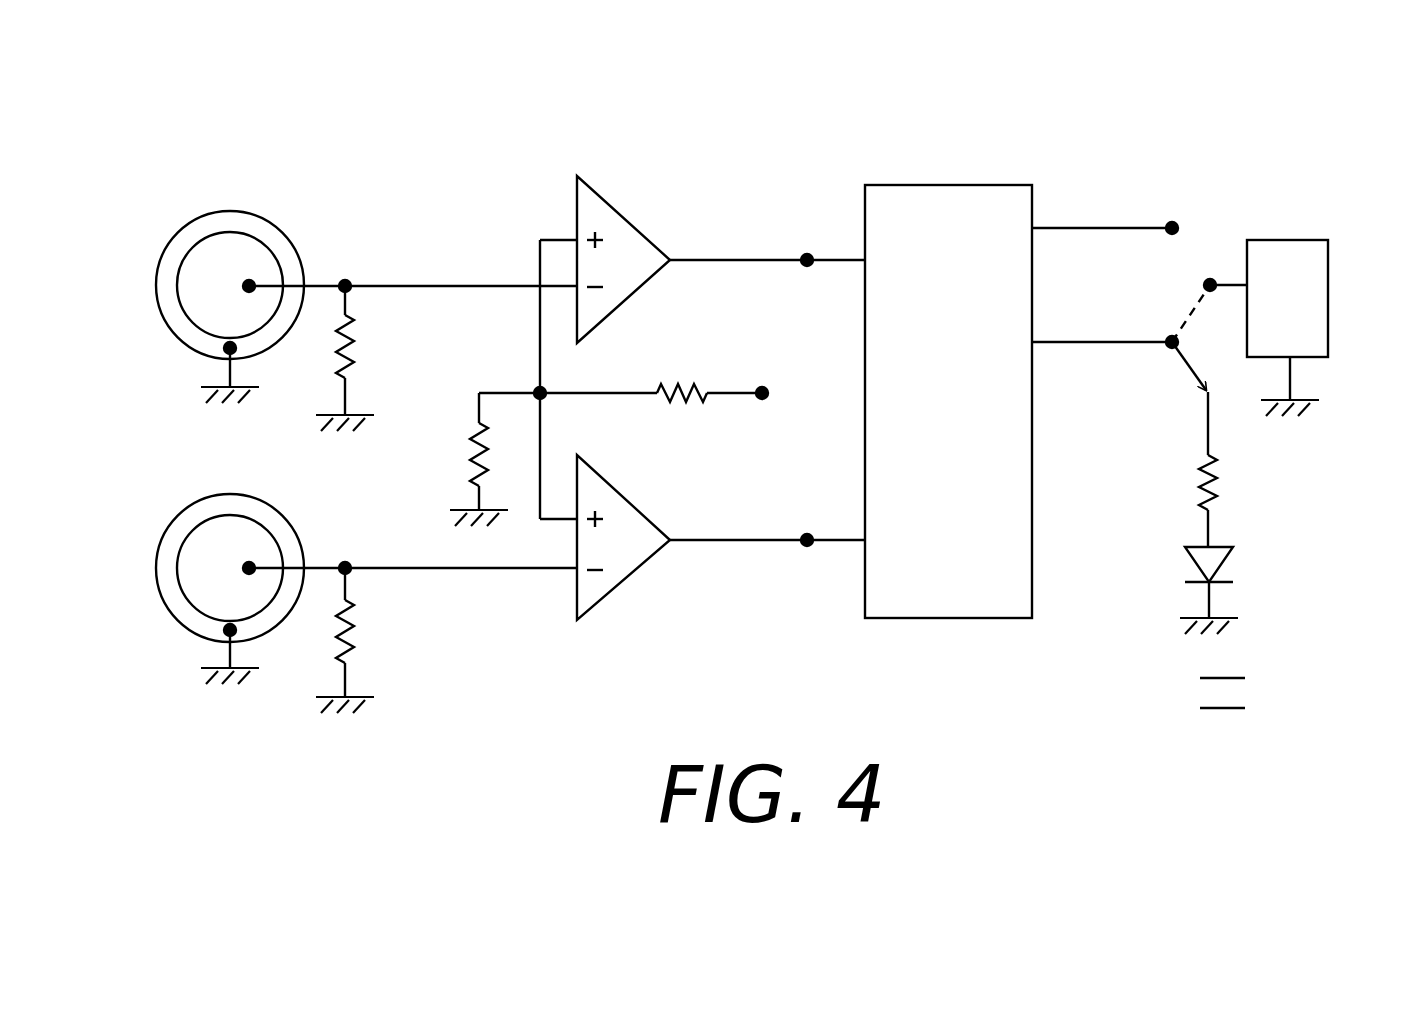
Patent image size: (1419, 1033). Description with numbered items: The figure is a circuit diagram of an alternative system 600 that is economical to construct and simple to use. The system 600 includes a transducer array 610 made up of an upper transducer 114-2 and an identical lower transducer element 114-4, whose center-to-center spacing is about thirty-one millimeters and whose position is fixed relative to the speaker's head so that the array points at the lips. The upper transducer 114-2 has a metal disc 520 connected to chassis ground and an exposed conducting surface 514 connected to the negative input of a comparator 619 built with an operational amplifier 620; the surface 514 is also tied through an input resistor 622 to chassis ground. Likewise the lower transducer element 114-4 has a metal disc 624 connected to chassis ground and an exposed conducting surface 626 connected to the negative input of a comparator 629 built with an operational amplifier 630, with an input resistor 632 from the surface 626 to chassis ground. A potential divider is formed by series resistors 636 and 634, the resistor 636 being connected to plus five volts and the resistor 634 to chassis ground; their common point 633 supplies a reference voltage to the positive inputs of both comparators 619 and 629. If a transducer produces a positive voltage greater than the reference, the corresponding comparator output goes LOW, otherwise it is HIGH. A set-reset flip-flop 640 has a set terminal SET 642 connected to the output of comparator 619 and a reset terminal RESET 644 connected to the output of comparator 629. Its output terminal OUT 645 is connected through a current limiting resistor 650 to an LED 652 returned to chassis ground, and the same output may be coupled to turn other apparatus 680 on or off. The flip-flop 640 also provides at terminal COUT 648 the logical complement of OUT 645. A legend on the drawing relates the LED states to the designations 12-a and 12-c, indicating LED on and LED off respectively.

The system 600 is at (457, 100).
The transducer array 610 is at (248, 140).
The upper transducer 114-2 is at (165, 250).
The exposed conducting surface 514 is at (245, 255).
The metal disc 520 is at (283, 248).
The input resistor 622 is at (350, 365).
The lower transducer element 114-4 is at (175, 525).
The metal disc 624 is at (205, 628).
The exposed conducting surface 626 is at (200, 580).
The input resistor 632 is at (350, 645).
The comparator 619 is at (612, 190).
The operational amplifier 620 is at (628, 270).
The comparator 629 is at (618, 595).
The operational amplifier 630 is at (627, 537).
The common point 633 is at (538, 390).
The series resistor 634 is at (462, 478).
The series resistor 636 is at (695, 395).
The set terminal SET 642 is at (807, 263).
The reset terminal RESET 644 is at (805, 543).
The set-reset flip-flop 640 is at (972, 436).
The terminal COUT 648 is at (1172, 228).
The output terminal OUT 645 is at (1172, 345).
The other apparatus 680 is at (1316, 306).
The current limiting resistor 650 is at (1212, 500).
The LED 652 is at (1190, 565).
The two-position state 12-a is at (1181, 677).
The ten-position state 12-c is at (1184, 707).